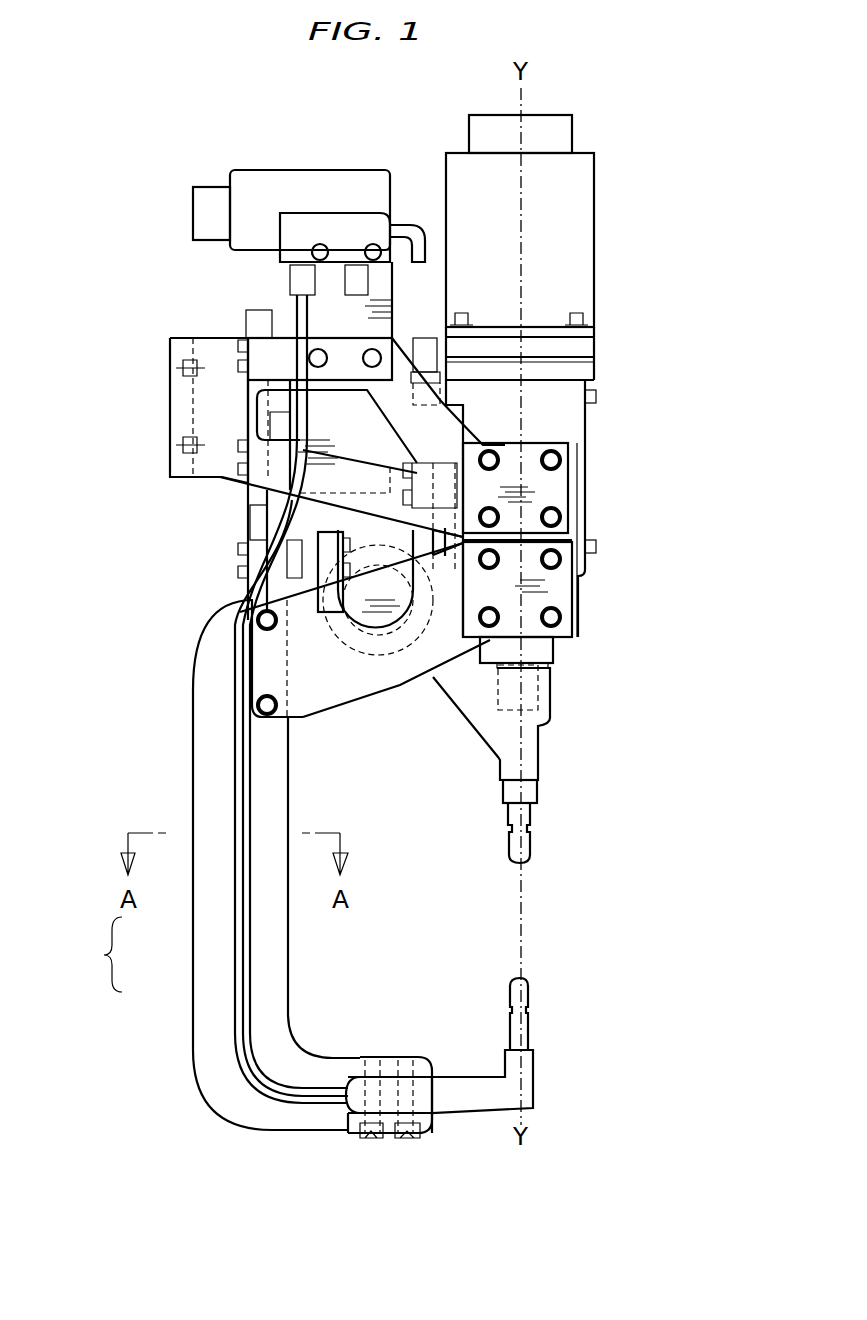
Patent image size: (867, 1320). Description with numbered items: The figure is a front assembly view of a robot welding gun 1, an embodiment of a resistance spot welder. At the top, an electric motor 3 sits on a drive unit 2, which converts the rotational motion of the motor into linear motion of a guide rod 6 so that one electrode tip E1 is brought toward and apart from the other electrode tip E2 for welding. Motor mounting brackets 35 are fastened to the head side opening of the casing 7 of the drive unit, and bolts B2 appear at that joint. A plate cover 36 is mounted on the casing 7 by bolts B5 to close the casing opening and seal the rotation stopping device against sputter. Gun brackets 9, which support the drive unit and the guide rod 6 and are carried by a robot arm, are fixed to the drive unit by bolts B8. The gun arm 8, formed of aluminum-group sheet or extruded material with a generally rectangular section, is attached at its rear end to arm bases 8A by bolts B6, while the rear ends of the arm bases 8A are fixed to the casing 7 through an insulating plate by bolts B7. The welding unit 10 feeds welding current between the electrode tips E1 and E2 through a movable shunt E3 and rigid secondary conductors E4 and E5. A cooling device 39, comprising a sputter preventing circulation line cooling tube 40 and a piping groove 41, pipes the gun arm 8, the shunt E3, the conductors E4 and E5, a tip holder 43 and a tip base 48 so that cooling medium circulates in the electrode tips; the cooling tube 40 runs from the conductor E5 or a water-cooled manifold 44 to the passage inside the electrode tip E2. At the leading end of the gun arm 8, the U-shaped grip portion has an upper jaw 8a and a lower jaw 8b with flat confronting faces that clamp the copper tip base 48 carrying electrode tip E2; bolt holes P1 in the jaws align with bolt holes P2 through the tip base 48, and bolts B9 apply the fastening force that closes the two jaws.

The robot welding gun 1 is at (304, 156).
The drive unit 2 is at (603, 226).
The electric motor 3 is at (580, 258).
The bolt B2 is at (582, 314).
The motor mounting brackets 35 is at (585, 352).
The bolts B5 is at (597, 397).
The casing 7 is at (572, 426).
The plate cover 36 is at (588, 466).
The gun brackets 9 is at (565, 494).
The bolts B8 is at (553, 518).
The arm bases 8A is at (562, 594).
The bolts B7 is at (553, 618).
The guide rod 6 is at (555, 653).
The tip holder 43 is at (532, 736).
The electrode tip E1 is at (530, 848).
The other electrode tip E2 is at (530, 996).
The tip base 48 is at (535, 1086).
The water-cooled manifold 44 is at (286, 240).
The welding unit 10 is at (272, 494).
The secondary conductor E5 is at (257, 520).
The secondary conductor E4 is at (310, 549).
The bolts B6 is at (265, 706).
The gun arm 8 is at (205, 745).
The movable shunt E3 is at (384, 656).
The cooling device 39 is at (100, 954).
The cooling tube 40 is at (243, 903).
The piping groove 41 is at (243, 958).
The bolt holes P1 is at (366, 1066).
The lower jaw 8b is at (392, 1066).
The bolt holes P2 is at (412, 1098).
The bolts B9 is at (368, 1140).
The upper jaw 8a is at (392, 1140).